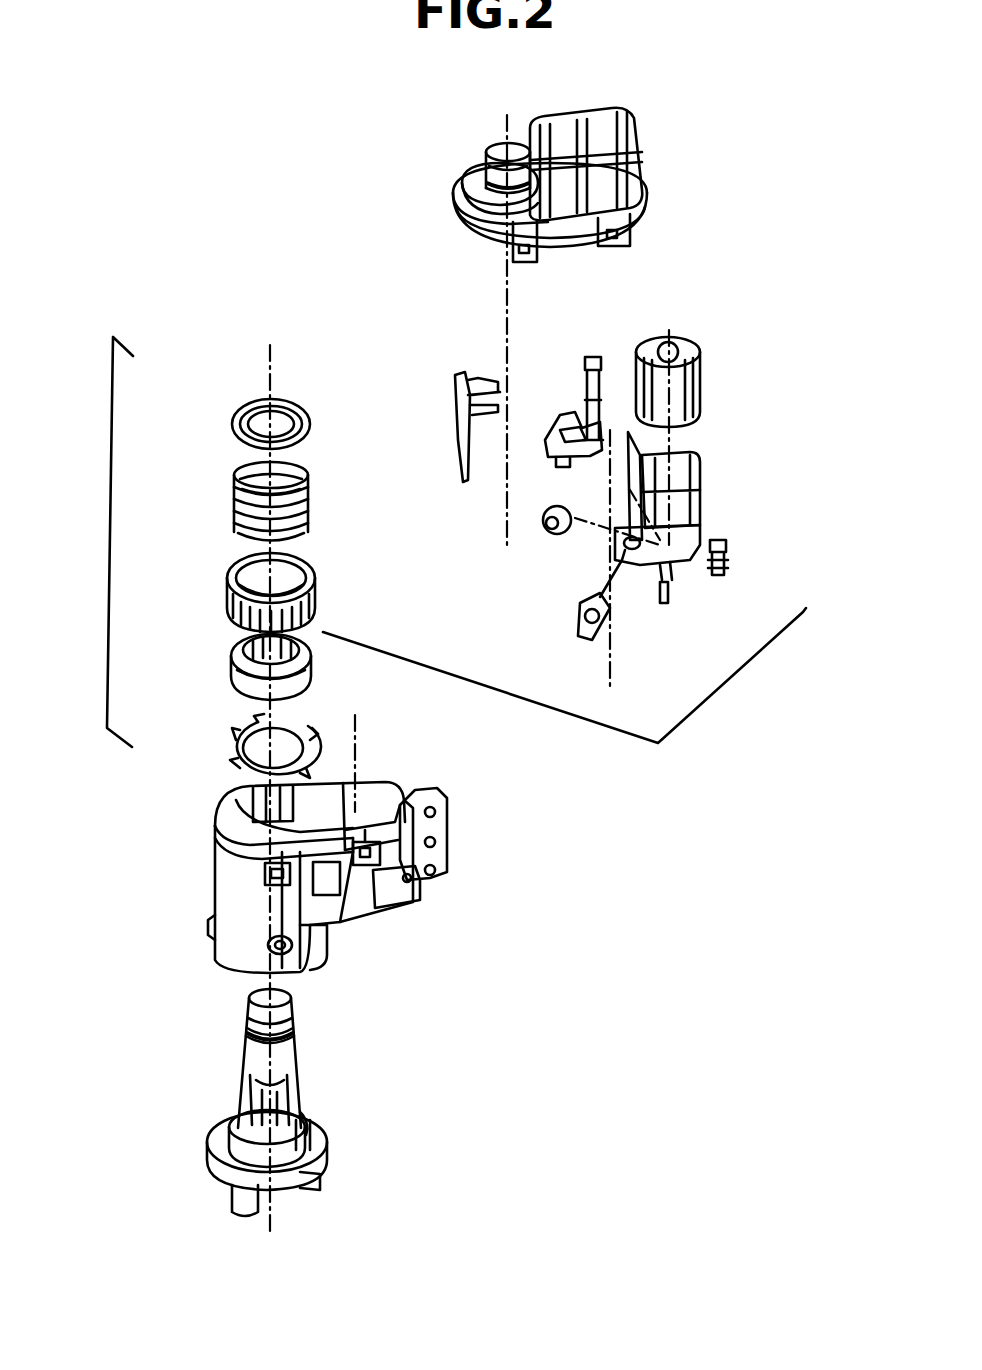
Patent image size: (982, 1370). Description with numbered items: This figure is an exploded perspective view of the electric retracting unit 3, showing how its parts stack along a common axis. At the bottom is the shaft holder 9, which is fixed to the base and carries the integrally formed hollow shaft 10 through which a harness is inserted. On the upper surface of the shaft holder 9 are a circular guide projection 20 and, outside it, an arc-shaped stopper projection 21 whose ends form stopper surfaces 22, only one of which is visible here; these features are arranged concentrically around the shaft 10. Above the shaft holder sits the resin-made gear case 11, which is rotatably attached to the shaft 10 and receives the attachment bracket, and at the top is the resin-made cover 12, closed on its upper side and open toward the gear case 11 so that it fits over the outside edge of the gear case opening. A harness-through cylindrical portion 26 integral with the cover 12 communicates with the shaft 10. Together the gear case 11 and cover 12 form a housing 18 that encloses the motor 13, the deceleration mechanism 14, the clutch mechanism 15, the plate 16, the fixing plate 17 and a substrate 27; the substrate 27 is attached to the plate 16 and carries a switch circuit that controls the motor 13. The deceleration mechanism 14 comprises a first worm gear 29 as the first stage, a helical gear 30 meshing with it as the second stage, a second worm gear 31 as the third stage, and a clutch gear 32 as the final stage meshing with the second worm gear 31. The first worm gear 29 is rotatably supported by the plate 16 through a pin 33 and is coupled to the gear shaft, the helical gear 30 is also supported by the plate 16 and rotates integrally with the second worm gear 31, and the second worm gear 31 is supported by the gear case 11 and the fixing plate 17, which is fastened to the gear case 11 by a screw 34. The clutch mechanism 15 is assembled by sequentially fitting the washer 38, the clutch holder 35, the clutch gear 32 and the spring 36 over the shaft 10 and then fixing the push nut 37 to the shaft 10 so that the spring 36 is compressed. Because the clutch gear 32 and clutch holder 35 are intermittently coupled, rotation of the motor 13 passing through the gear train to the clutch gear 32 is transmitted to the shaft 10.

The electric retracting unit 3 is at (347, 248).
The shaft holder 9 is at (215, 1138).
The shaft 10 is at (295, 1054).
The gear case 11 is at (212, 879).
The cover 12 is at (634, 150).
The motor 13 is at (690, 362).
The deceleration mechanism 14 is at (564, 694).
The clutch mechanism 15 is at (114, 520).
The plate 16 is at (690, 483).
The fixing plate 17 is at (560, 418).
The housing 18 is at (235, 817).
The guide projection 20 is at (226, 1163).
The stopper projection 21 is at (310, 1120).
The stopper surface 22 is at (320, 1176).
The harness-through cylindrical portion 26 is at (487, 143).
The substrate 27 is at (466, 386).
The first worm gear 29 is at (668, 600).
The helical gear 30 is at (542, 517).
The second worm gear 31 is at (613, 647).
The clutch gear 32 is at (233, 578).
The pin 33 is at (668, 606).
The screw 34 is at (588, 368).
The clutch holder 35 is at (236, 660).
The spring 36 is at (240, 494).
The push nut 37 is at (245, 417).
The washer 38 is at (233, 746).